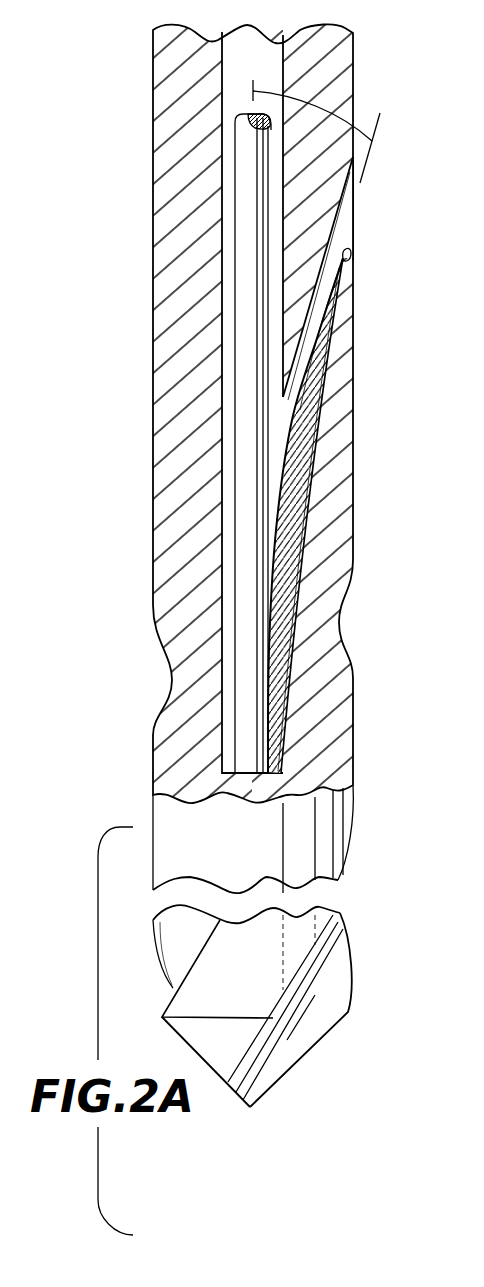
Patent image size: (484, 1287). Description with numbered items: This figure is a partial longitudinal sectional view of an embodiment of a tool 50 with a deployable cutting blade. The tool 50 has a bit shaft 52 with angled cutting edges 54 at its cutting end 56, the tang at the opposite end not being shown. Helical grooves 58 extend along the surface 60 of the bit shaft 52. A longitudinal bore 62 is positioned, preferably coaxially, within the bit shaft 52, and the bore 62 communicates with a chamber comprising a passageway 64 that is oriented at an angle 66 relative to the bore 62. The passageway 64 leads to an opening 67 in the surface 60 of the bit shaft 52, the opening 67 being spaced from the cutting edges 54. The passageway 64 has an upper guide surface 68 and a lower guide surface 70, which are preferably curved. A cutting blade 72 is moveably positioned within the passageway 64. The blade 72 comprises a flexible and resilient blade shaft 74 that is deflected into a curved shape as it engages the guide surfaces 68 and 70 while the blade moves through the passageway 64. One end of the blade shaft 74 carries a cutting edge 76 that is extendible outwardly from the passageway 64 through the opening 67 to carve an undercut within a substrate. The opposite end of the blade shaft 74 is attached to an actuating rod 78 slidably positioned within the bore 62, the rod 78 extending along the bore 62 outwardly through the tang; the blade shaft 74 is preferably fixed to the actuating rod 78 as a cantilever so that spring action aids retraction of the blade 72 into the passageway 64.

The tool 50 is at (403, 814).
The bit shaft 52 is at (153, 215).
The angled cutting edges 54 is at (305, 1058).
The cutting end 56 is at (248, 1108).
The helical grooves 58 is at (178, 946).
The surface 60 is at (270, 991).
The longitudinal bore 62 is at (270, 67).
The passageway 64 is at (340, 233).
The angle 66 is at (353, 63).
The opening 67 is at (353, 210).
The upper guide surface 68 is at (342, 194).
The lower guide surface 70 is at (349, 248).
The cutting blade 72 is at (313, 367).
The blade shaft 74 is at (300, 453).
The cutting edge 76 is at (338, 278).
The actuating rod 78 is at (253, 540).